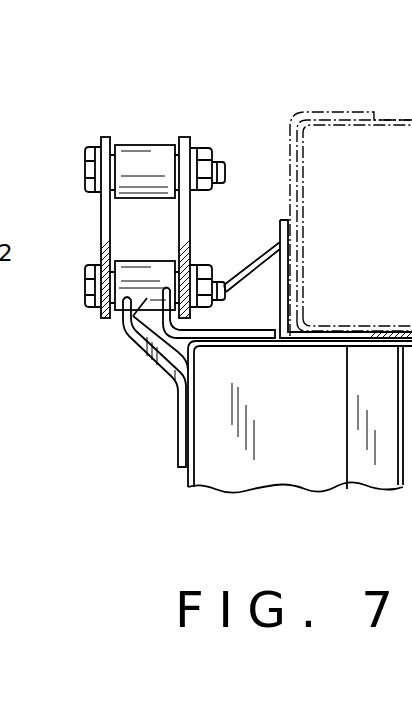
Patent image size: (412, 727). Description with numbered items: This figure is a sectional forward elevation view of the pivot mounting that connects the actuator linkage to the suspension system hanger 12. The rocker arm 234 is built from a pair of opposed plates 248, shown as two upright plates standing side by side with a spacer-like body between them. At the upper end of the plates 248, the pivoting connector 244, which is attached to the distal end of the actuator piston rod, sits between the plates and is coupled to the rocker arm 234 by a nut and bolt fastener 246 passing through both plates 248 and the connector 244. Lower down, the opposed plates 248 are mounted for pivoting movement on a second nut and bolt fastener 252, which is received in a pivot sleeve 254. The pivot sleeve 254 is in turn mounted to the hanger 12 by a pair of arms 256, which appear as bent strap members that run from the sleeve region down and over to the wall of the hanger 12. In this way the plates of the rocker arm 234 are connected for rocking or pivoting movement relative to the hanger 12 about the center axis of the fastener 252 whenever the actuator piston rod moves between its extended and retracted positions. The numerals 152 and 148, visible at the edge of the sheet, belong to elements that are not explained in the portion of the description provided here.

The suspension system hanger 12 is at (170, 481).
The rocker arm 234 is at (95, 206).
The pivoting connector 244 is at (148, 160).
The nut and bolt fastener 246 is at (207, 152).
The opposed plates 248 is at (100, 237).
The nut and bolt fastener 252 is at (85, 289).
The pivot sleeve 254 is at (122, 315).
The pair of arms 256 is at (152, 366).
The frame member 152 is at (0, 500).
The support member 148 is at (21, 582).